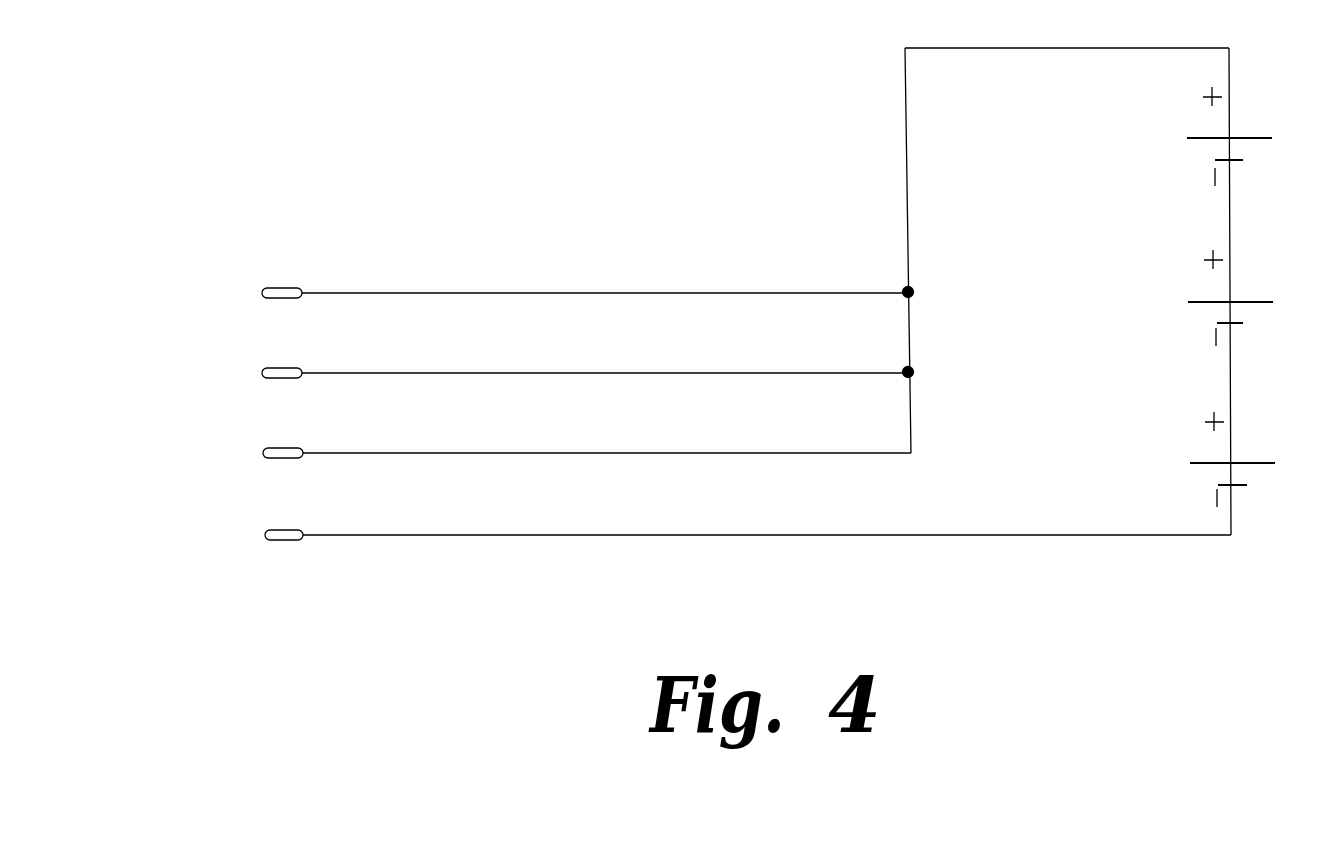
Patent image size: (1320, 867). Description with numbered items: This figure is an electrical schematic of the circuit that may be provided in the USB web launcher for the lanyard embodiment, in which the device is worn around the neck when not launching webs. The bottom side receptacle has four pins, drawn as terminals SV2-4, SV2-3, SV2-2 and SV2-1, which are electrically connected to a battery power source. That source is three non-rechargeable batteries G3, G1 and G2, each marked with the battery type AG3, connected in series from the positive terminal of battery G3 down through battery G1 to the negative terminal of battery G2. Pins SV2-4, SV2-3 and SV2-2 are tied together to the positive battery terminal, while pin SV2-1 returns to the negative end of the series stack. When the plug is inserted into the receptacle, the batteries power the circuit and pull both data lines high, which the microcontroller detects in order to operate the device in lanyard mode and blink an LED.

The receptacle pin 4 SV2-4 is at (513, 294).
The receptacle pin 3 SV2-3 is at (513, 375).
The receptacle pin 2 SV2-2 is at (512, 453).
The receptacle pin 1 SV2-1 is at (674, 535).
The first battery G3 is at (1208, 136).
The second battery G1 is at (1210, 298).
The third battery G2 is at (1211, 459).
The AG3 battery type AG3 is at (1232, 297).